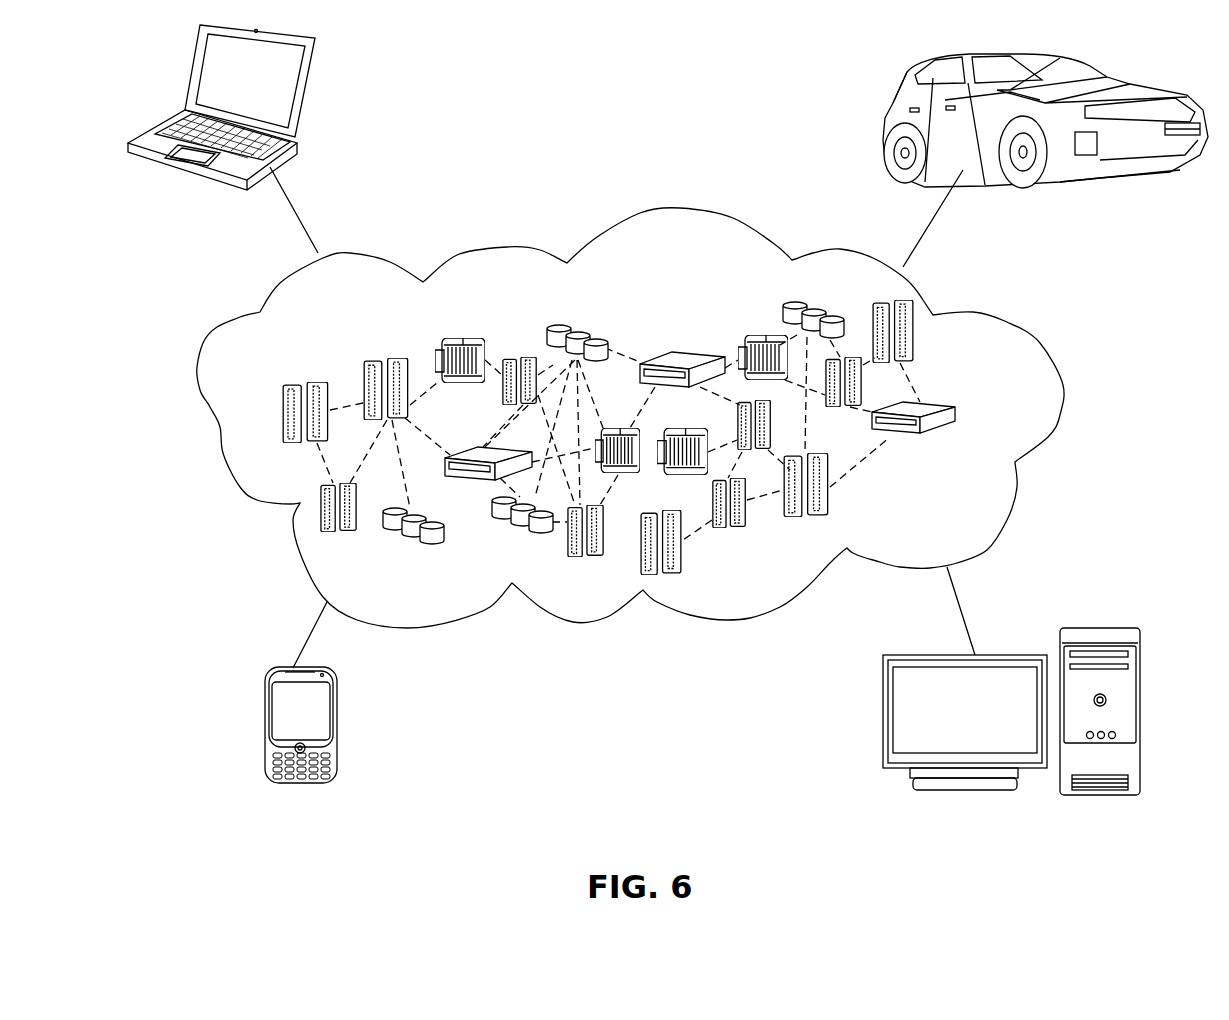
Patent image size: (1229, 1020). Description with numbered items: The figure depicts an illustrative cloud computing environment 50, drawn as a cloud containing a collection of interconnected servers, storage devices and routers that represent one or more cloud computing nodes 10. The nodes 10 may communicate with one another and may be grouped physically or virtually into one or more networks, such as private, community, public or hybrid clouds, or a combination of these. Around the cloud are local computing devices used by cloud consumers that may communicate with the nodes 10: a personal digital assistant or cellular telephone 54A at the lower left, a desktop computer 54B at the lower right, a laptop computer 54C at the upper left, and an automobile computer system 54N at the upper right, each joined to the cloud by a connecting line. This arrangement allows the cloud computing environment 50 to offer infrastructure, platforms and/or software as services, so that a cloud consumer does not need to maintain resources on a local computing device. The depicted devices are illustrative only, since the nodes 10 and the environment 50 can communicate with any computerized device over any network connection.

The cloud computing nodes 10 is at (995, 413).
The cloud computing environment 50 is at (1023, 327).
The personal digital assistant or cellular telephone 54A is at (263, 728).
The desktop computer 54B is at (1104, 628).
The laptop computer 54C is at (307, 93).
The automobile computer system 54N is at (890, 100).